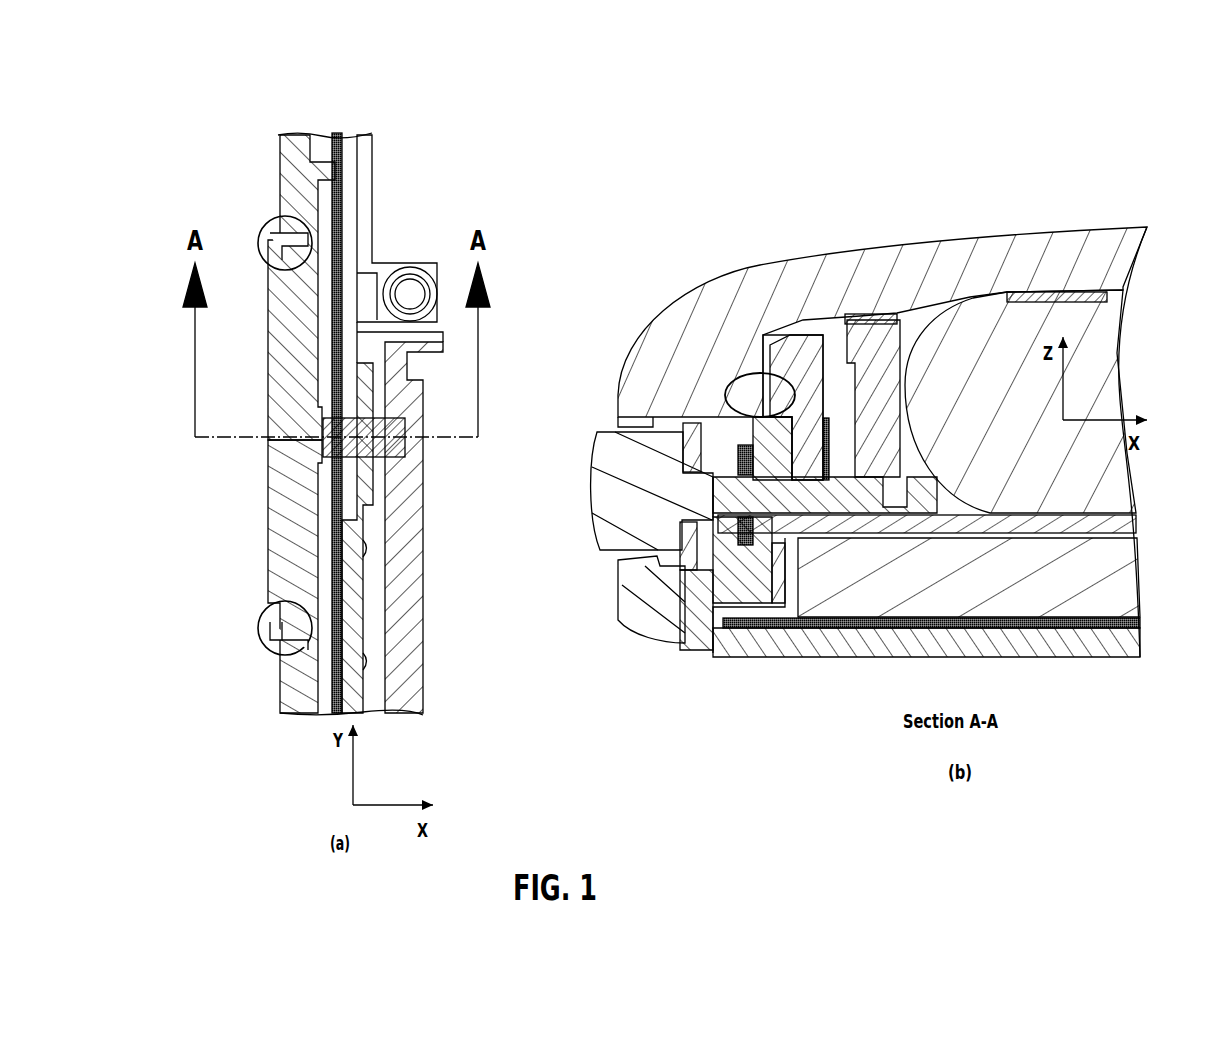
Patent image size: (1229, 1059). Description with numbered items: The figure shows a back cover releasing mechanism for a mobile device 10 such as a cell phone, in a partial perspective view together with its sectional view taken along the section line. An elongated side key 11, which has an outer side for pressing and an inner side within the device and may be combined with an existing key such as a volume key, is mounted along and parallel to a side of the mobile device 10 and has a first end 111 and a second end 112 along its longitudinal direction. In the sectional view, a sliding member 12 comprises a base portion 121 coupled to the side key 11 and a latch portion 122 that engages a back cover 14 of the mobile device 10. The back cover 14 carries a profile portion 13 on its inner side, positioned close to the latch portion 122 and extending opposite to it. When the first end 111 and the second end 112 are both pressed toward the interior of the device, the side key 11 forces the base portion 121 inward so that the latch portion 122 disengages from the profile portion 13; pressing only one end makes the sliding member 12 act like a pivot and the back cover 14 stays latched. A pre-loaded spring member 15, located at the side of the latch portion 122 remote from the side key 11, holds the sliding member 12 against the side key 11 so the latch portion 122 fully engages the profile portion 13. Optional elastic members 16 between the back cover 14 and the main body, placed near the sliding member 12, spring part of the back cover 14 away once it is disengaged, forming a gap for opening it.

The mobile device 10 is at (233, 170).
The side key 11 is at (435, 424).
The first end 111 is at (258, 233).
The second end 112 is at (258, 642).
The sliding member 12 is at (800, 519).
The base portion 121 is at (783, 461).
The latch portion 122 is at (810, 446).
The profile portion 13 is at (750, 371).
The back cover 14 is at (830, 293).
The spring member 15 is at (376, 501).
The elastic members 16 is at (877, 313).